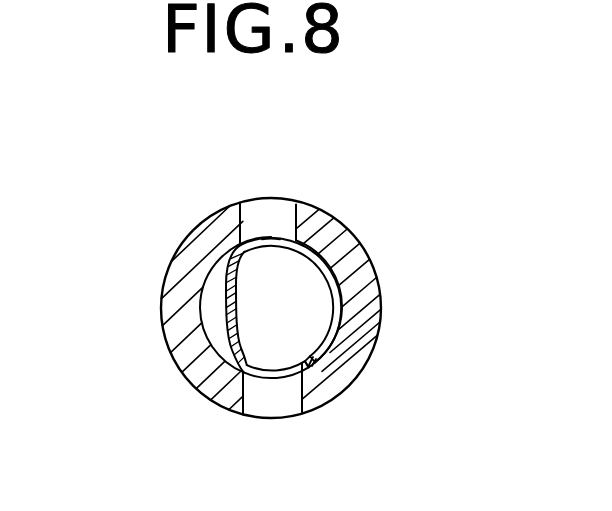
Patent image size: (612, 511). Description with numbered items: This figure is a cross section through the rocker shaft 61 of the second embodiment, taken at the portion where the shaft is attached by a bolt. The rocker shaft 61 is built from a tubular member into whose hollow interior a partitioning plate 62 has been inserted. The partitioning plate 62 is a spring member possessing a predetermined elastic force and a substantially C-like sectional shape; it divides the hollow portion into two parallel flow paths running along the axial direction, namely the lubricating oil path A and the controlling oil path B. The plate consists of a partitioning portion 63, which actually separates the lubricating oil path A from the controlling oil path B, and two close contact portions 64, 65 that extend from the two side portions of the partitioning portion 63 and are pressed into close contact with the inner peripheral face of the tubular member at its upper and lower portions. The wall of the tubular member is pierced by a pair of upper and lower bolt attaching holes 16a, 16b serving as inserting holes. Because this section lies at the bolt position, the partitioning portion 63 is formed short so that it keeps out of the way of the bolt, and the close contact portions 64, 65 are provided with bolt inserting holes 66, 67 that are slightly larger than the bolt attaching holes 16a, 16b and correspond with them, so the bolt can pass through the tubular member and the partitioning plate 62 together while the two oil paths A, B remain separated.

The rocker shaft 61 is at (184, 236).
The bolt attaching hole 16a is at (256, 205).
The bolt attaching hole 16b is at (282, 407).
The partitioning plate 62 is at (271, 304).
The partitioning portion 63 is at (226, 288).
The close contact portion 64 is at (313, 245).
The close contact portion 65 is at (320, 369).
The bolt inserting hole 66 is at (268, 242).
The bolt inserting hole 67 is at (268, 378).
The lubricating oil path A is at (316, 287).
The controlling oil path B is at (217, 327).